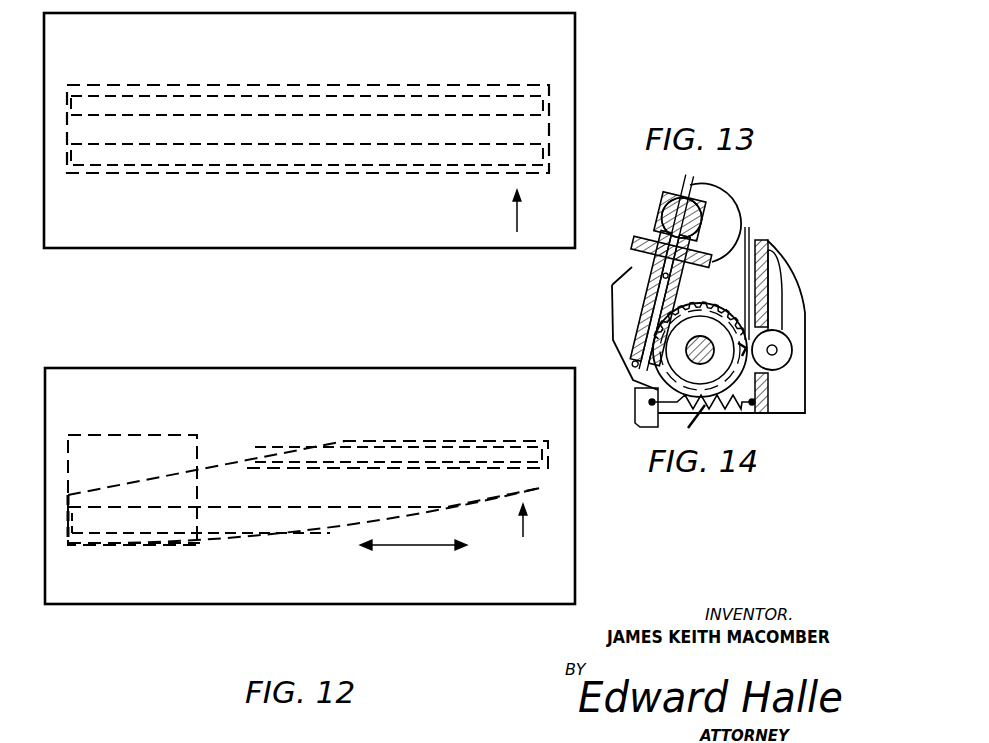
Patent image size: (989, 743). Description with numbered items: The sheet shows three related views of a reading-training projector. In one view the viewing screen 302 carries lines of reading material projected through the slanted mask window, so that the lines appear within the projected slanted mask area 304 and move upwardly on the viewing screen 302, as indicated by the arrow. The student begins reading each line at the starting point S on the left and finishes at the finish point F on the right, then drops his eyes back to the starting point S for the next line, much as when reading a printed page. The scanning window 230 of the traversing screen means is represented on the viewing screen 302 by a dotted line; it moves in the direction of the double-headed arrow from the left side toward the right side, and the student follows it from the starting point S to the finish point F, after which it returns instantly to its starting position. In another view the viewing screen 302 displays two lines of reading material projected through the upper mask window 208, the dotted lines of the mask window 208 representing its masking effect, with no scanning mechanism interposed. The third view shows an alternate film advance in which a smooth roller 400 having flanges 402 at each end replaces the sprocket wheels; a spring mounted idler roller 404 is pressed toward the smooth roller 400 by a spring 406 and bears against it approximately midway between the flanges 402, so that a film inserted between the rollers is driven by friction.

In FIG. 13, the upper mask window 208 is at (513, 84).
In FIG. 13, the viewing screen 302 is at (433, 233).
In FIG. 12, the viewing screen 302 is at (314, 592).
In FIG. 12, the scanning window 230 is at (190, 548).
In FIG. 12, the projected slanted mask area 304 is at (540, 488).
In FIG. 12, the finish point F is at (551, 459).
In FIG. 12, the starting point S is at (68, 521).
In FIG. 14, the smooth roller 400 is at (720, 330).
In FIG. 14, the flanges 402 is at (707, 297).
In FIG. 14, the idler roller 404 is at (782, 360).
In FIG. 14, the spring 406 is at (780, 290).